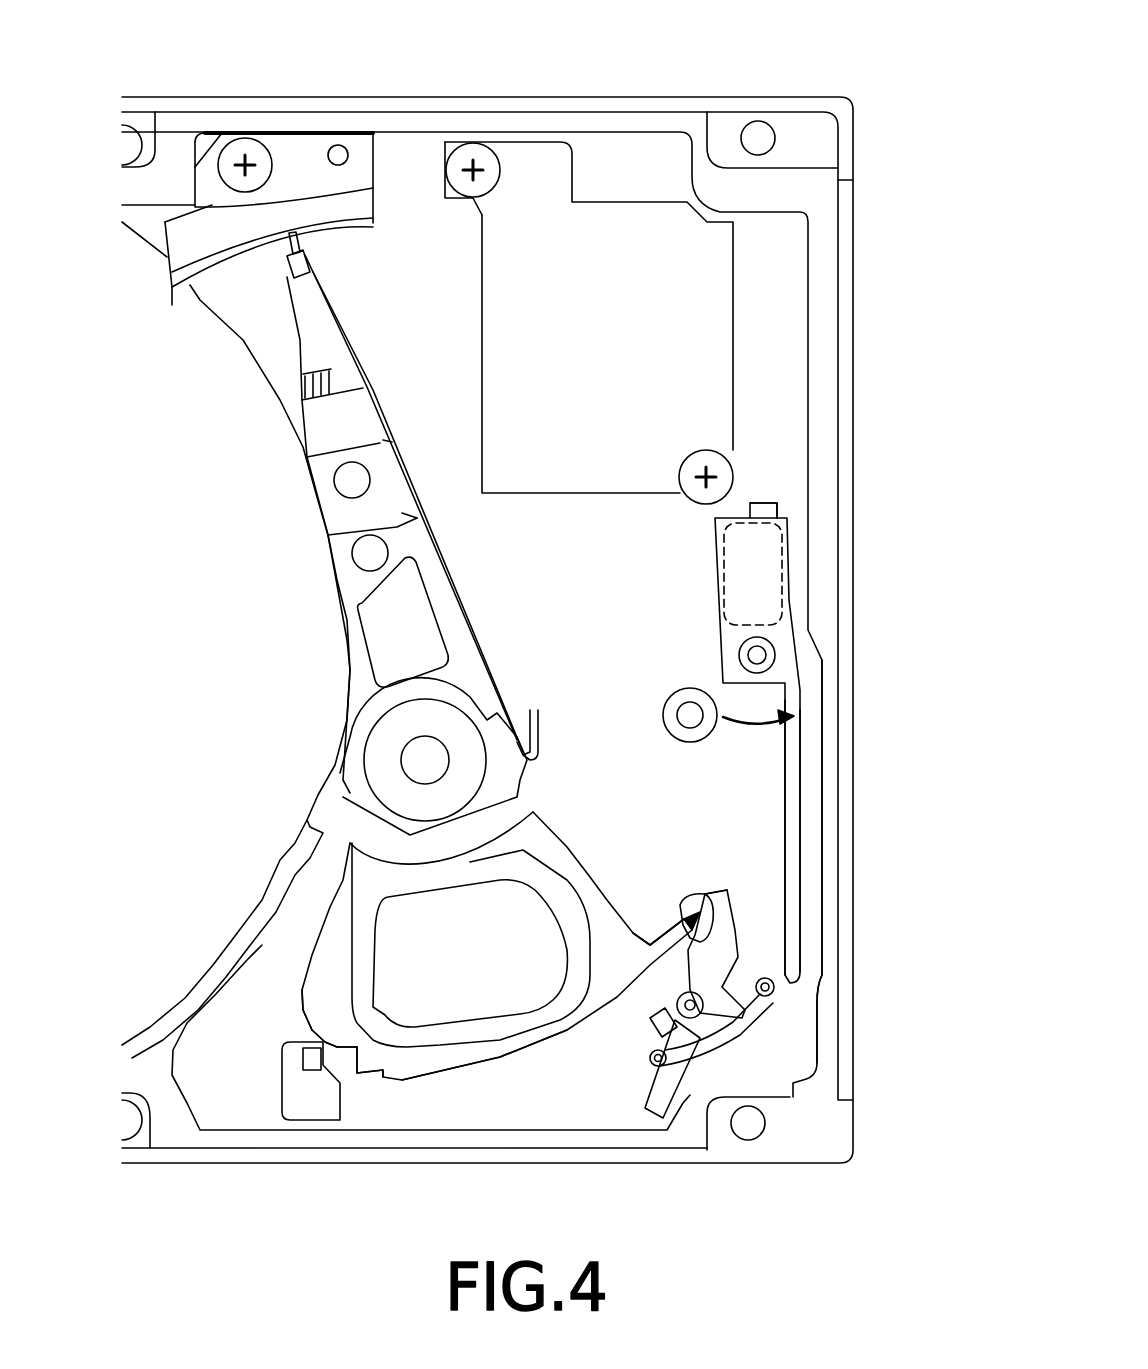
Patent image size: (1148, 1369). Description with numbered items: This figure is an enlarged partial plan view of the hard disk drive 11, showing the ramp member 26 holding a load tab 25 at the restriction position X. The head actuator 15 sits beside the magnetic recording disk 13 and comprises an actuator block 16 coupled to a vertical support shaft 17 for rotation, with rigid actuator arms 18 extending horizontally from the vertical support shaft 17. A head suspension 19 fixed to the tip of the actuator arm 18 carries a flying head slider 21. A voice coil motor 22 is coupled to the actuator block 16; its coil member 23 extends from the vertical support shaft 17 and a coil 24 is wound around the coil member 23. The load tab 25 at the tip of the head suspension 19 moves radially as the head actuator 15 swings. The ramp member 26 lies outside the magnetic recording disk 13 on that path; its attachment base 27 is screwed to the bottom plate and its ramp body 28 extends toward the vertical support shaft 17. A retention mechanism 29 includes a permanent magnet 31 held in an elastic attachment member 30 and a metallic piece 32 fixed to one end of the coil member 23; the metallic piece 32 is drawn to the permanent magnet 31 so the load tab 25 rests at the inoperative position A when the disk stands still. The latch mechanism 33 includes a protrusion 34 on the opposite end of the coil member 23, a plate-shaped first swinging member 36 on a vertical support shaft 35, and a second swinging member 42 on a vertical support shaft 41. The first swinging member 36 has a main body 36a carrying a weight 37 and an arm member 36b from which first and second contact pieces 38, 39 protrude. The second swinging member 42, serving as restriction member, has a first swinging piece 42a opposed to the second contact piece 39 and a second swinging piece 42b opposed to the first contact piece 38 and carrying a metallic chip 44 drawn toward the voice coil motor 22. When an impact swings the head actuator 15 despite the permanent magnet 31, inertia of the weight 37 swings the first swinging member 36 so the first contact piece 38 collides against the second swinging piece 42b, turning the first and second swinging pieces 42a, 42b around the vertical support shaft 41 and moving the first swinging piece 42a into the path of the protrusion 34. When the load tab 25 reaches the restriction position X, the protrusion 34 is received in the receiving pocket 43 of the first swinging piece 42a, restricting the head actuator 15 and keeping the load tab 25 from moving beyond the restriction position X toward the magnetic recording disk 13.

The hard disk drive 11 is at (625, 80).
The magnetic recording disk 13 is at (240, 298).
The head actuator 15 is at (283, 690).
The actuator block 16 is at (520, 797).
The vertical support shaft 17 is at (400, 765).
The actuator arm 18 is at (345, 605).
The head suspension 19 is at (333, 318).
The flying head slider 21 is at (312, 264).
The voice coil motor 22 is at (278, 914).
The coil member 23 is at (463, 1066).
The coil 24 is at (378, 975).
The load tab 25 is at (357, 230).
The ramp member 26 is at (224, 118).
The attachment base 27 is at (358, 147).
The ramp body 28 is at (176, 292).
The retention mechanism 29 is at (310, 1125).
The attachment member 30 is at (282, 1092).
The permanent magnet 31 is at (303, 1060).
The metallic piece 32 is at (366, 1078).
The latch mechanism 33 is at (828, 998).
The protrusion 34 is at (657, 940).
The vertical support shaft 35 is at (745, 655).
The first swinging member 36 is at (822, 718).
The main body 36a is at (722, 612).
The arm member 36b is at (785, 808).
The weight 37 is at (793, 590).
The first contact piece 38 is at (648, 1058).
The second contact piece 39 is at (770, 998).
The vertical support shaft 41 is at (695, 1012).
The second swinging member 42 is at (760, 932).
The first swinging piece 42a is at (742, 882).
The second swinging piece 42b is at (650, 1105).
The receiving pocket 43 is at (708, 905).
The metallic chip 44 is at (652, 1020).
The restriction position X is at (292, 235).
The inoperative position A is at (345, 213).